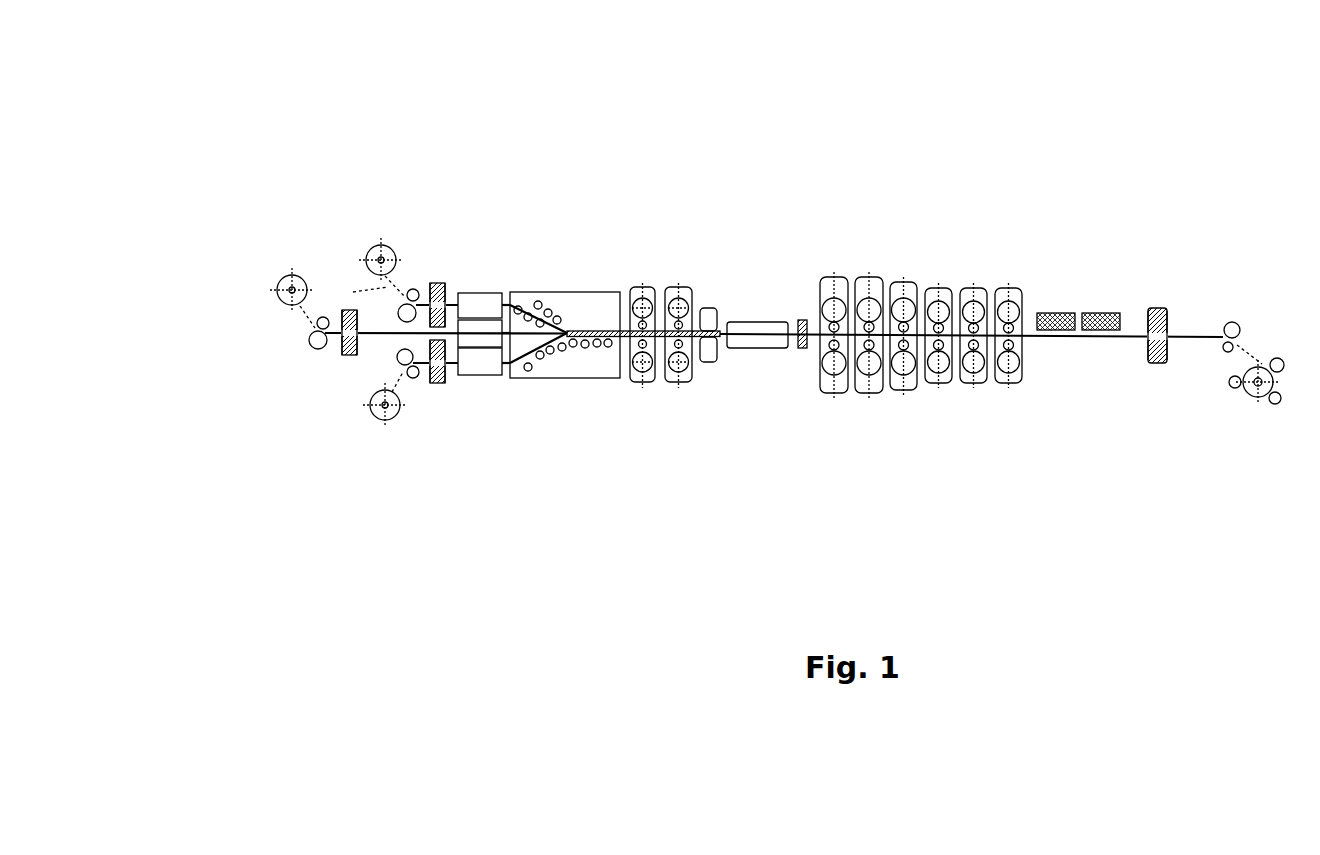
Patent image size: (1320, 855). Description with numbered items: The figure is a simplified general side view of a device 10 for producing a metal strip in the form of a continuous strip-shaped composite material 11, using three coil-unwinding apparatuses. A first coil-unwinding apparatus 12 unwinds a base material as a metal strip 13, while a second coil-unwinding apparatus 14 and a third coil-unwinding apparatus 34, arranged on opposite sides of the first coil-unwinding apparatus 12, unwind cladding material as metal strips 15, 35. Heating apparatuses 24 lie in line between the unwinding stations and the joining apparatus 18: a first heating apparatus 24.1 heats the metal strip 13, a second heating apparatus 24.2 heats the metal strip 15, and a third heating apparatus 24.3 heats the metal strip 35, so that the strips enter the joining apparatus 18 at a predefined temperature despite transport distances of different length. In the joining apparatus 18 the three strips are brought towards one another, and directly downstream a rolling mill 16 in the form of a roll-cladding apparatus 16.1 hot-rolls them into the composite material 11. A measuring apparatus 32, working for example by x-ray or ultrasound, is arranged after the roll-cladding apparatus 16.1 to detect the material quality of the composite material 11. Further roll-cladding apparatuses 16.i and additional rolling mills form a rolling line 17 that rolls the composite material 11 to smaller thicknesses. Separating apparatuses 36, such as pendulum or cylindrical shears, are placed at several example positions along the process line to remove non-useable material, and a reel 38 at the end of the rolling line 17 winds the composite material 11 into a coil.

The device 10 is at (1043, 118).
The continuous strip-shaped composite material 11 is at (1197, 333).
The first coil-unwinding apparatus 12 is at (258, 282).
The metal strip 13 is at (300, 318).
The second coil-unwinding apparatus 14 is at (352, 240).
The metal strip 15 is at (353, 292).
The rolling mill 16 is at (677, 229).
The roll-cladding apparatus 16.1 is at (637, 286).
The further roll-cladding apparatus 16.i is at (677, 286).
The rolling line 17 is at (926, 260).
The joining apparatus 18 is at (580, 292).
The heating apparatuses 24 is at (518, 358).
The first heating apparatus 24.1 is at (488, 338).
The second heating apparatus 24.2 is at (482, 292).
The third heating apparatus 24.3 is at (475, 362).
The measuring apparatus 32 is at (715, 304).
The third coil-unwinding apparatus 34 is at (360, 422).
The metal strip 35 is at (397, 375).
The separating apparatuses 36 is at (438, 288).
The reel 38 is at (1264, 362).